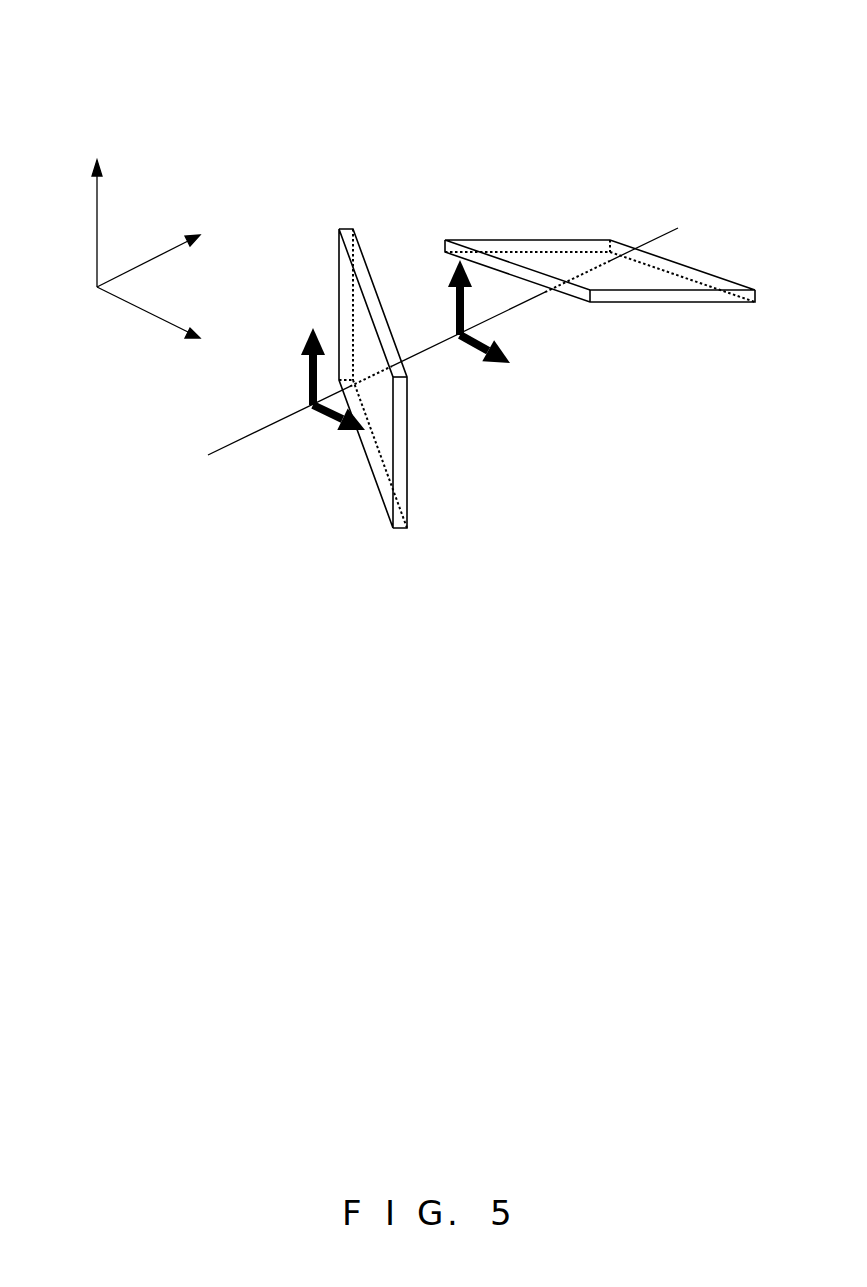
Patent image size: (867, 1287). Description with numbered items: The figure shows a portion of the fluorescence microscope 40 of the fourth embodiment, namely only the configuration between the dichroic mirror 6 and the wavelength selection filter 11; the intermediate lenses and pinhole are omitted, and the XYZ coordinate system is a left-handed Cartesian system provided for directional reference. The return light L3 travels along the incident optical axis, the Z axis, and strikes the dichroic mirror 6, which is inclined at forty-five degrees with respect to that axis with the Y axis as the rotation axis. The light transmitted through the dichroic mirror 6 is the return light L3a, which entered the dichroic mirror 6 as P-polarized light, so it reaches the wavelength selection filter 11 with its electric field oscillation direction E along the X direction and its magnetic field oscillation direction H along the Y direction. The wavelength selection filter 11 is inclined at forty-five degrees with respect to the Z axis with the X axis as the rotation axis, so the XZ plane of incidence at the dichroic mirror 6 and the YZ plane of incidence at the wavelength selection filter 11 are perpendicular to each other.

The fluorescence microscope 40 is at (805, 50).
The dichroic mirror 6 is at (396, 530).
The wavelength selection filter 11 is at (706, 295).
The return light L3 is at (288, 416).
The return light transmitted through the dichroic mirror L3a is at (433, 345).